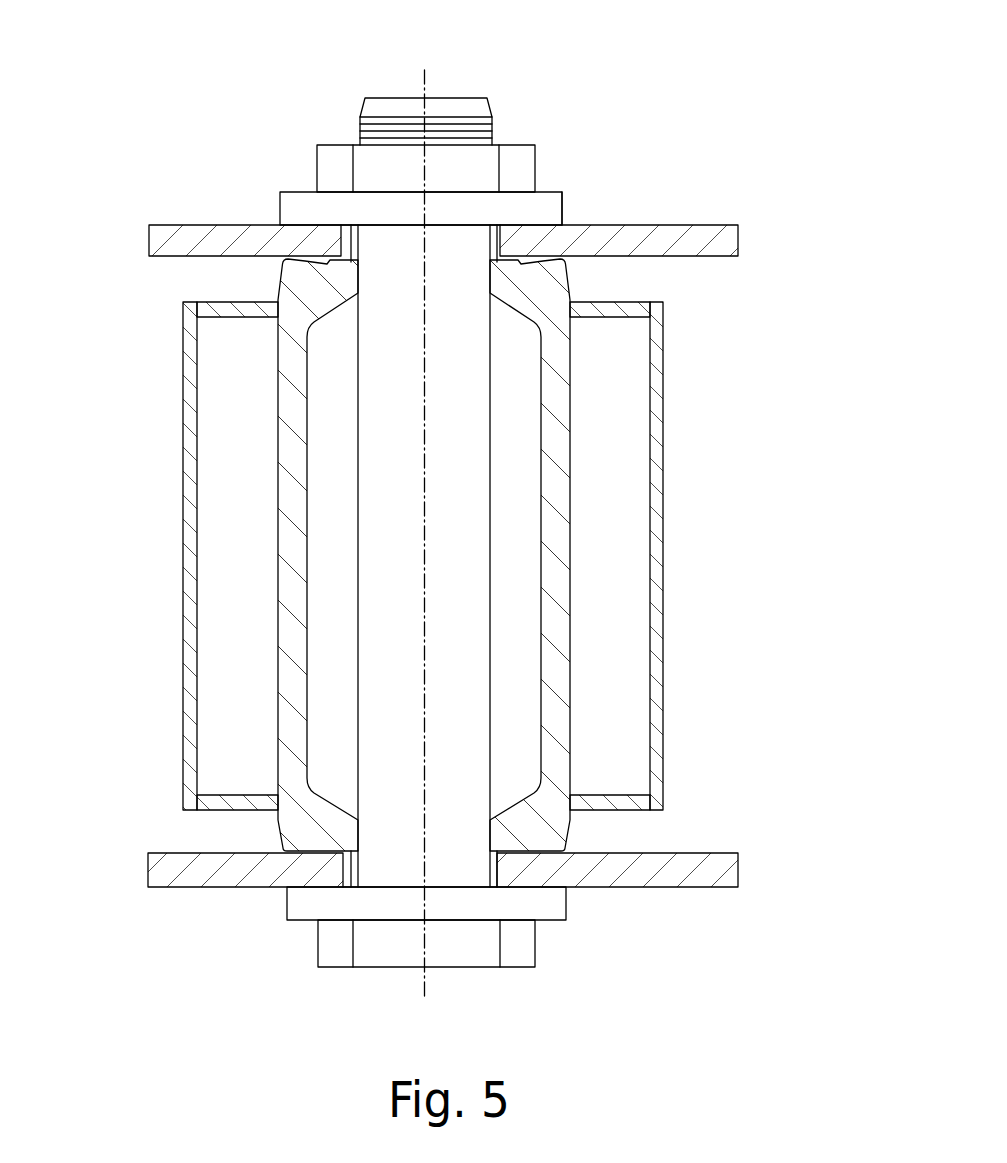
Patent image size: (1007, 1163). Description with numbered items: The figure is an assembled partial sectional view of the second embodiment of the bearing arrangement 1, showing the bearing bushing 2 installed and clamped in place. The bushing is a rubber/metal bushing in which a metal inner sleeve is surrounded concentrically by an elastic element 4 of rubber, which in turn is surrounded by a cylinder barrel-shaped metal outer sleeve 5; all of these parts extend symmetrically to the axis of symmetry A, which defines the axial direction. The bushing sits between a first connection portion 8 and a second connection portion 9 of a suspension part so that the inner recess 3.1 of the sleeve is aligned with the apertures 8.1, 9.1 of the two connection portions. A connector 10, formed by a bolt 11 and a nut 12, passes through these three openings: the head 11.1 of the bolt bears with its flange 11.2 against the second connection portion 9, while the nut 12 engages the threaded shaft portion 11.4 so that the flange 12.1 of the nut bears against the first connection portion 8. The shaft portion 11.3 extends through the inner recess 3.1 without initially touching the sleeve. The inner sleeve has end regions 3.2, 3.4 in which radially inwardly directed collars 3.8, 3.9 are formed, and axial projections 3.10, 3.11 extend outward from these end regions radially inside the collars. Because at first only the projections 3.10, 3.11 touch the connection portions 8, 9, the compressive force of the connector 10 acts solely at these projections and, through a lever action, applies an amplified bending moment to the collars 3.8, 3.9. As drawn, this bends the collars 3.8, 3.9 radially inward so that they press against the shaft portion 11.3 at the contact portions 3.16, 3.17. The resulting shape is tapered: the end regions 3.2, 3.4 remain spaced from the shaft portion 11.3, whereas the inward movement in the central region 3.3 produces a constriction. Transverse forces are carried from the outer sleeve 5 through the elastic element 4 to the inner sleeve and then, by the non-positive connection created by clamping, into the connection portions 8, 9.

The bearing arrangement 1 is at (790, 175).
The bearing bushing 2 is at (677, 562).
The inner recess 3.1 is at (530, 660).
The end region 3.2 is at (283, 262).
The central region 3.3 is at (258, 425).
The end region 3.4 is at (277, 846).
The collar 3.8 is at (334, 318).
The collar 3.9 is at (337, 786).
The axial projection 3.10 is at (338, 260).
The axial projection 3.11 is at (355, 853).
The contact portion 3.16 is at (368, 267).
The contact portion 3.17 is at (367, 837).
The elastic element 4 is at (246, 589).
The outer sleeve 5 is at (663, 632).
The first connection portion 8 is at (190, 225).
The aperture 8.1 is at (497, 222).
The second connection portion 9 is at (157, 888).
The aperture 9.1 is at (358, 892).
The connector 10 is at (287, 143).
The bolt 11 is at (408, 590).
The head 11.1 is at (545, 942).
The flange 11.2 is at (297, 927).
The shaft portion 11.3 is at (493, 748).
The threaded shaft portion 11.4 is at (490, 128).
The nut 12 is at (515, 152).
The flange 12.1 is at (568, 202).
The axis of symmetry A is at (425, 610).